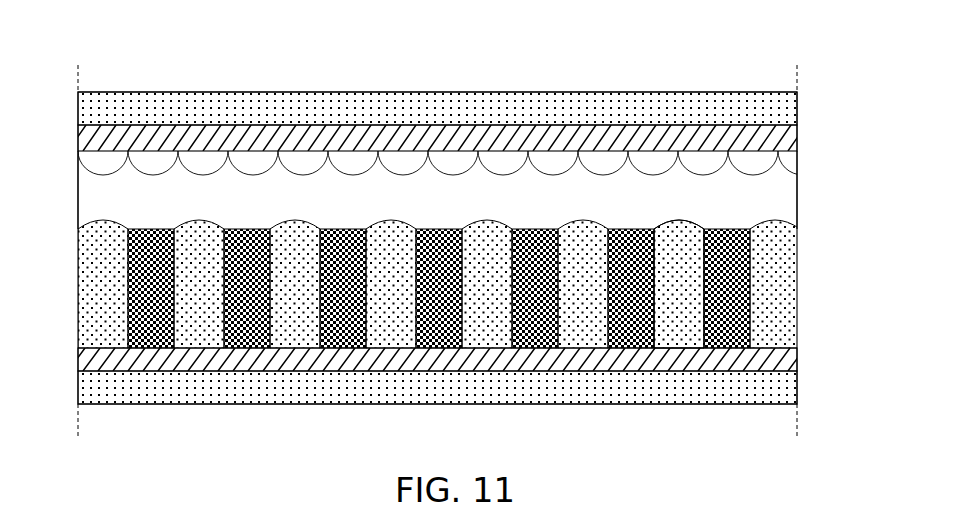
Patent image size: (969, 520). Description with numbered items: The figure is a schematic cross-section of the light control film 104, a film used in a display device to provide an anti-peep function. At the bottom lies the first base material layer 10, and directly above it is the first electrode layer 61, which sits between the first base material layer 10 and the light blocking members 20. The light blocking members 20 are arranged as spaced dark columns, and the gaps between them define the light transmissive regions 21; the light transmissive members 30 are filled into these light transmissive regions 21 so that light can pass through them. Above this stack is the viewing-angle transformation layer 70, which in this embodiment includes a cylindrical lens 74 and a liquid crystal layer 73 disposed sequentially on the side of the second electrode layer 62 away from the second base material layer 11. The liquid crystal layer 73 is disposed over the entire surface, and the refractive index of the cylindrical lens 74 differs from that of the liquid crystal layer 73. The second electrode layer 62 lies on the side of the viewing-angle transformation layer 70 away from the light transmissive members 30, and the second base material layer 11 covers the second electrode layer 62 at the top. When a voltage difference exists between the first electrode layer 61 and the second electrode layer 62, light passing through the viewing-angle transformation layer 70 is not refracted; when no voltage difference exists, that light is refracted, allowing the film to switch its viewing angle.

The light control film 104 is at (190, 66).
The second base material layer 11 is at (755, 113).
The second electrode layer 62 is at (758, 140).
The viewing-angle transformation layer 70 is at (482, 187).
The cylindrical lens 74 is at (750, 165).
The liquid crystal layer 73 is at (755, 205).
The light blocking members 20 is at (743, 263).
The light transmissive regions 21 is at (677, 328).
The light transmissive members 30 is at (755, 310).
The first electrode layer 61 is at (760, 362).
The first base material layer 10 is at (760, 397).